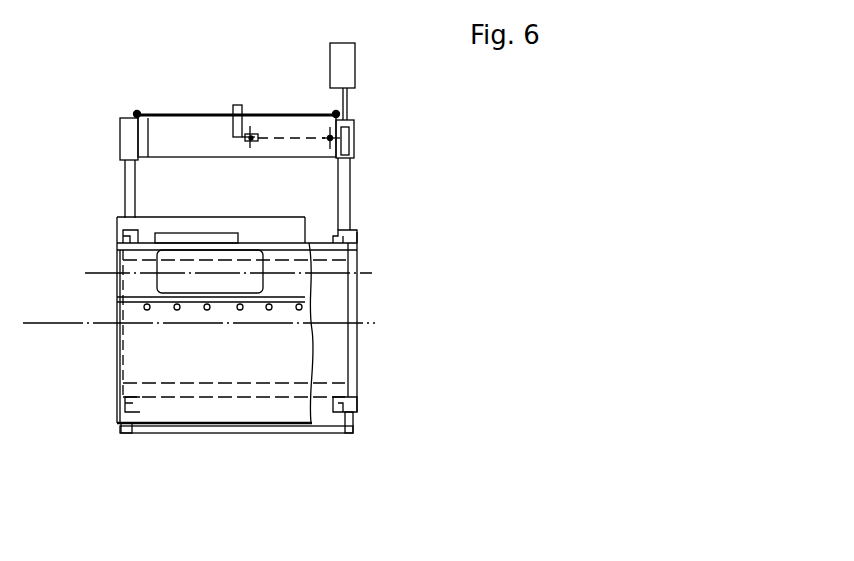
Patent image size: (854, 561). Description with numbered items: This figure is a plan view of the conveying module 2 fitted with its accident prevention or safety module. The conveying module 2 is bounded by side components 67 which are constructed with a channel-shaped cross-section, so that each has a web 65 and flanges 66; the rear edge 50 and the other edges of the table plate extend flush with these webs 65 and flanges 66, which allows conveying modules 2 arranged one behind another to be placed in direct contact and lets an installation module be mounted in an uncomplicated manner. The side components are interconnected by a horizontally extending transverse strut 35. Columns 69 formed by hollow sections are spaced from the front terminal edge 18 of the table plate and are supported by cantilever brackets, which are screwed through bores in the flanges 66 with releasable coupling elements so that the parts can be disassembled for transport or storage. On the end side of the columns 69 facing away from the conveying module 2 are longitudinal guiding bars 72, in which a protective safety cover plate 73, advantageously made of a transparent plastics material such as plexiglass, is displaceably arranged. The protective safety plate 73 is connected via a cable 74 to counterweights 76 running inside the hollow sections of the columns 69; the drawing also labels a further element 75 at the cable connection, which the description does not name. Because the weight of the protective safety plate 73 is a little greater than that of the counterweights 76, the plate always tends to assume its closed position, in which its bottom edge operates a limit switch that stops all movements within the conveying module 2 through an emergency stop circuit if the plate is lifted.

The conveying module 2 is at (106, 373).
The front terminal edge 18 is at (241, 218).
The transverse strut 35 is at (322, 243).
The rear edge 50 is at (157, 424).
The web 65 is at (356, 300).
The flange 66 is at (341, 231).
The side component 67 is at (110, 292).
The column 69 is at (356, 150).
The longitudinal guiding bar 72 is at (137, 113).
The protective safety cover plate 73 is at (188, 114).
The cable 74 is at (289, 133).
The coupling fitting 75 is at (248, 142).
The counterweight 76 is at (348, 128).